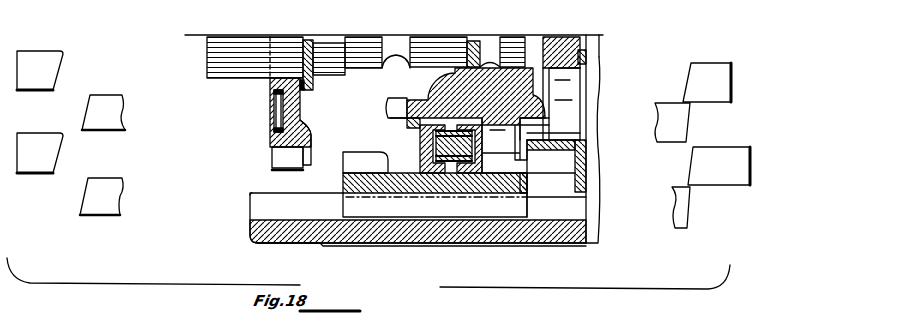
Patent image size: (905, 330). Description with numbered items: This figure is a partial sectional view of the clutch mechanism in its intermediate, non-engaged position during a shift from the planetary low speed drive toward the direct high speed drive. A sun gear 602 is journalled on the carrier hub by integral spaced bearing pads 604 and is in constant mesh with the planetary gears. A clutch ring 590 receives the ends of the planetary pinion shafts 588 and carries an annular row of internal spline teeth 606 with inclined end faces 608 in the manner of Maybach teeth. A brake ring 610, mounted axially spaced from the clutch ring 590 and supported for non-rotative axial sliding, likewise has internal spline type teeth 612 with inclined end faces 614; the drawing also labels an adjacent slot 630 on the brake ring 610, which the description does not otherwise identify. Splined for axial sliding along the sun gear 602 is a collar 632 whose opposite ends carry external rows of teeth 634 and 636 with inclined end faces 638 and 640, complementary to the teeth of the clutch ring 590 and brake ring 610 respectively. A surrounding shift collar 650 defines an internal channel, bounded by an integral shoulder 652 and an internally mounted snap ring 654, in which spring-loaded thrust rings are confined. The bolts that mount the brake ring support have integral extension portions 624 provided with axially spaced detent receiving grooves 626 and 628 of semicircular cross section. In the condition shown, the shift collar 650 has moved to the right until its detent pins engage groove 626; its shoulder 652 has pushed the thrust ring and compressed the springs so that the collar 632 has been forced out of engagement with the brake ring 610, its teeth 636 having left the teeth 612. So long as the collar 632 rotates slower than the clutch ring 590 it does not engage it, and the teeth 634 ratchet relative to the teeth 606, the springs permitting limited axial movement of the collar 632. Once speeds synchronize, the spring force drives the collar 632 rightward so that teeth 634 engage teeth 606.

The planetary pinion shaft 588 is at (570, 95).
The clutch ring 590 is at (555, 42).
The sun gear 602 is at (250, 223).
The bearing pads 604 is at (265, 244).
The internal spline teeth 606 is at (708, 68).
The inclined end faces 608 is at (533, 143).
The brake ring 610 is at (272, 138).
The internal spline type teeth 612 is at (272, 158).
The inclined end faces 614 is at (325, 150).
The extension portions 624 is at (365, 40).
The detent receiving groove 626 is at (486, 62).
The detent receiving groove 628 is at (402, 56).
The slot 630 is at (268, 112).
The collar 632 is at (350, 180).
The external teeth 634 is at (492, 168).
The external teeth 636 is at (372, 150).
The inclined end faces 638 is at (690, 120).
The inclined end faces 640 is at (82, 120).
The shift collar 650 is at (437, 97).
The shoulder 652 is at (411, 104).
The snap ring 654 is at (550, 134).